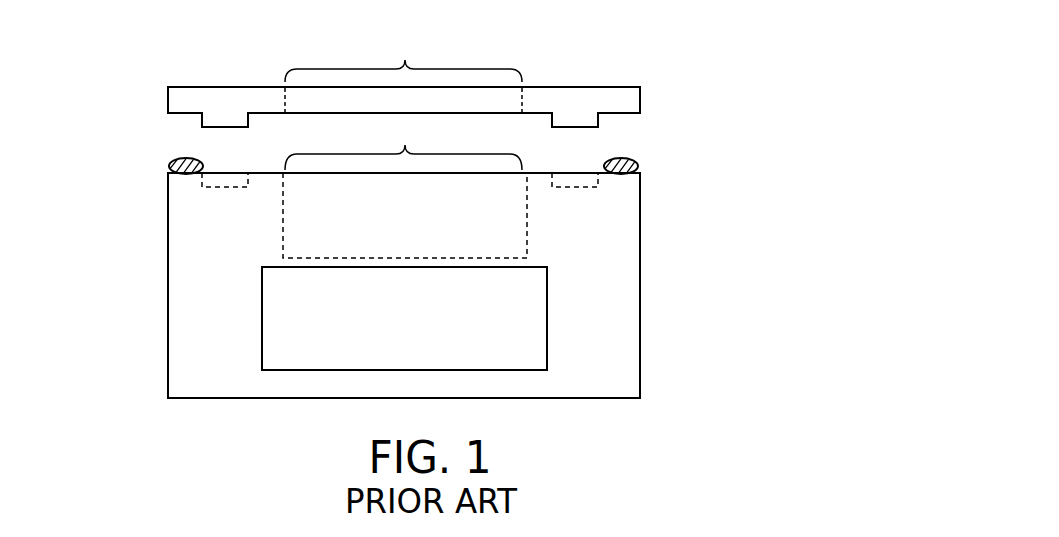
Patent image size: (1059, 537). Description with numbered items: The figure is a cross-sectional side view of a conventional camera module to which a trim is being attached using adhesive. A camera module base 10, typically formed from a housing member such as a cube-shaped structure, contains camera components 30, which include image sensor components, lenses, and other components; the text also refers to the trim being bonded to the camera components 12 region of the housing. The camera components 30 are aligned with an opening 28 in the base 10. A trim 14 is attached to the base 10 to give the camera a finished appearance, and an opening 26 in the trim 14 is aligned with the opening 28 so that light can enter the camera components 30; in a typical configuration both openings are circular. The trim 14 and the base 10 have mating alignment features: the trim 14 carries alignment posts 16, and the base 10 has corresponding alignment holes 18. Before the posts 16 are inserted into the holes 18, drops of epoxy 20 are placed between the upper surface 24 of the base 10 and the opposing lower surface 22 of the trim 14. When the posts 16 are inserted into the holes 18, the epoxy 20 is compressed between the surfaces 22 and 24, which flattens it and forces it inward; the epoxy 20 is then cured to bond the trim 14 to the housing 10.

The camera module base 10 is at (633, 260).
The camera components 12 is at (548, 318).
The trim 14 is at (610, 87).
The alignment posts 16 is at (217, 116).
The alignment holes 18 is at (218, 185).
The epoxy drops 20 is at (170, 162).
The lower surface 22 is at (620, 116).
The upper surface 24 is at (615, 174).
The opening 26 is at (403, 71).
The opening 28 is at (405, 186).
The camera components 30 is at (260, 307).